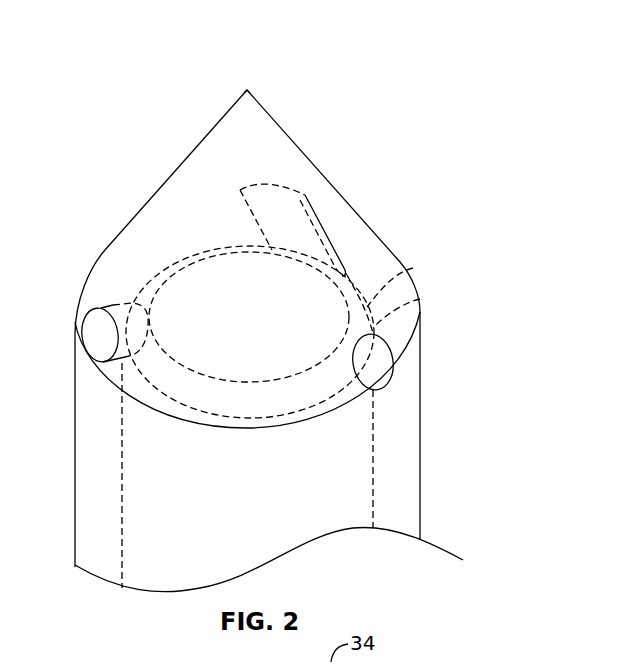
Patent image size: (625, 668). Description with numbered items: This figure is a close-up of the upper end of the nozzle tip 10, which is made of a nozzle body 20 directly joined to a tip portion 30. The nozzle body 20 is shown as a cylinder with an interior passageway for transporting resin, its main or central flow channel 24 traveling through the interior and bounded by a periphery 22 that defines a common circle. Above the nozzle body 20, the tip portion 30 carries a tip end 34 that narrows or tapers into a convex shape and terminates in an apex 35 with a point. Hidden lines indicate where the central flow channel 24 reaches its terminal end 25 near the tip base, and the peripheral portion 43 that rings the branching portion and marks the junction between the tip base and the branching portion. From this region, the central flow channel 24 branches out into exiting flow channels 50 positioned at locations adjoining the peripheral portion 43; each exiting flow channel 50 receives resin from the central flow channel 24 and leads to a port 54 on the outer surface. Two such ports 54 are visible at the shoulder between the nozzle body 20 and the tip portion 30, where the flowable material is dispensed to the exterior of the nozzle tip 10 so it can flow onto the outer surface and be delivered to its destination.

The nozzle tip 10 is at (331, 130).
The nozzle body 20 is at (420, 494).
The periphery 22 is at (122, 533).
The central flow channel 24 is at (282, 533).
The terminal end 25 is at (413, 268).
The tip portion 30 is at (168, 201).
The tip end 34 is at (213, 151).
The apex 35 is at (247, 90).
The peripheral portion 43 is at (420, 299).
The exiting flow channel 50 is at (120, 302).
The port 54 is at (83, 325).